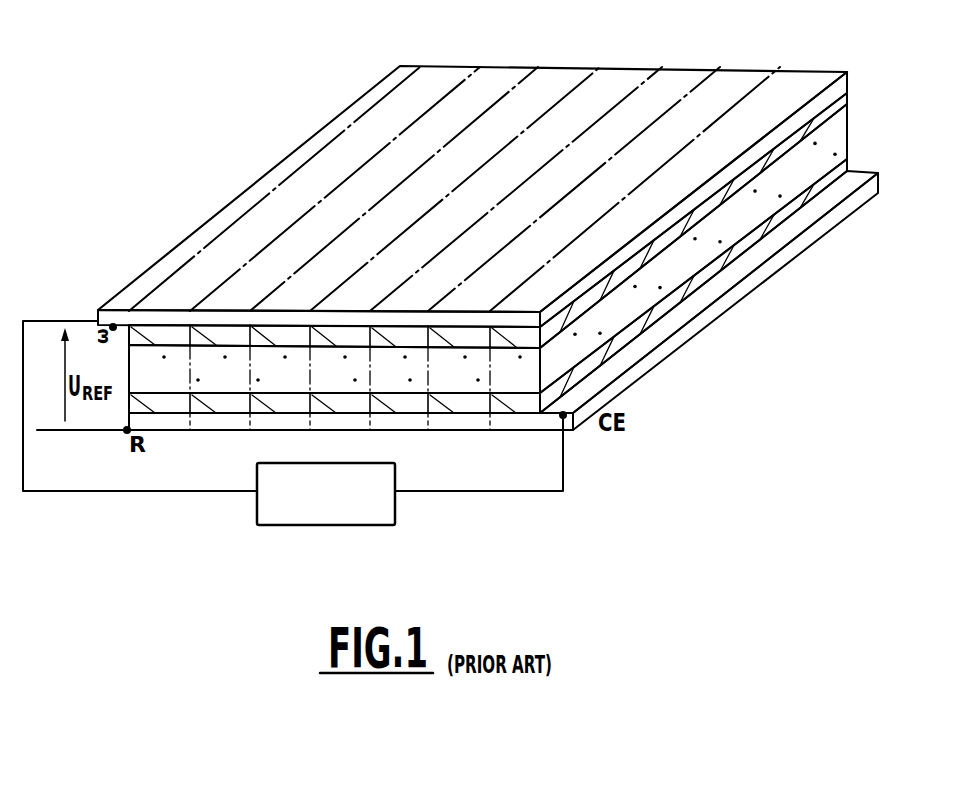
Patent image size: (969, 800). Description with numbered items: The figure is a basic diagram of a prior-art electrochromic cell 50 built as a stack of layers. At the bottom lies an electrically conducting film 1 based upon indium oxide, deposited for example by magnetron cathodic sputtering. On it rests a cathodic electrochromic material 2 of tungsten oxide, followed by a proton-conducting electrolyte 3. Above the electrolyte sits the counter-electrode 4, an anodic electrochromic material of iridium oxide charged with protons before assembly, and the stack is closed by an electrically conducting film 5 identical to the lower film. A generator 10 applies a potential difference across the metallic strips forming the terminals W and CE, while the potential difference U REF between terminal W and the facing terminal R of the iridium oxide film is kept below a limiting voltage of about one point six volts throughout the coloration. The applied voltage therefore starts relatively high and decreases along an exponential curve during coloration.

The electrochromic cell 50 is at (488, 221).
The electrically conducting film 5 is at (777, 137).
The counter-electrode 4 is at (733, 190).
The proton-conducting electrolyte 3 is at (703, 253).
The cathodic electrochromic material 2 is at (660, 308).
The electrically conducting film 1 is at (627, 383).
The generator 10 is at (355, 520).